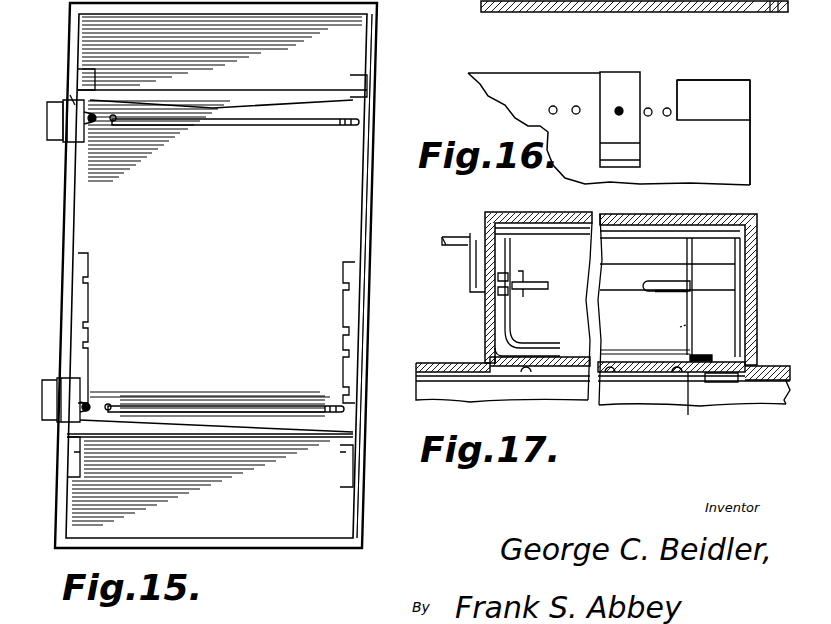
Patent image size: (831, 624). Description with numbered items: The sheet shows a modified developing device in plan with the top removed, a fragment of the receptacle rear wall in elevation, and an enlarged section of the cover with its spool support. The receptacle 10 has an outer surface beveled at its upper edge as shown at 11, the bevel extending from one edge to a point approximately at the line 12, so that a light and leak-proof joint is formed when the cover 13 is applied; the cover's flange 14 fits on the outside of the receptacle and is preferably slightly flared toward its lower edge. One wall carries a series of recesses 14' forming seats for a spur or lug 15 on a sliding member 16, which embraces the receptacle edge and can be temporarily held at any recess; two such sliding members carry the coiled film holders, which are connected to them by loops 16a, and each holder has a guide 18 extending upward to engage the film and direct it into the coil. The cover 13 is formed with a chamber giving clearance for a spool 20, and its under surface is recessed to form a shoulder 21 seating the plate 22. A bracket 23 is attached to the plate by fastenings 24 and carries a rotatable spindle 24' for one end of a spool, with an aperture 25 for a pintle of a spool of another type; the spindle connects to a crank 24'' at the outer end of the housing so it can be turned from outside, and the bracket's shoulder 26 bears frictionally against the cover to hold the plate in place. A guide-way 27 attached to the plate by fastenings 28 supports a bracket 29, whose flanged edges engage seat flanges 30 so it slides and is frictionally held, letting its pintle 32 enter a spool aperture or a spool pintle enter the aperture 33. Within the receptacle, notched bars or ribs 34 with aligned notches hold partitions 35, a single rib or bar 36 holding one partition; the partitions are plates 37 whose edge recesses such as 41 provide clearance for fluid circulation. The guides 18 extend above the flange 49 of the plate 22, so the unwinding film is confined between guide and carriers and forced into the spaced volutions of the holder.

In FIG. 15, the receptacle 10 is at (58, 146).
In FIG. 15, the beveled surface 11 is at (366, 190).
In FIG. 16, the beveled surface 11 is at (742, 100).
In FIG. 15, the line 12 is at (72, 85).
In FIG. 16, the line 12 is at (680, 93).
In FIG. 17, the cover 13 is at (770, 365).
In FIG. 16, the flange 14 is at (657, 98).
In FIG. 16, the recesses 14' is at (564, 97).
In FIG. 16, the spur or lug 15 is at (622, 114).
In FIG. 16, the sliding member 16 is at (618, 75).
In FIG. 15, the loops 16a is at (88, 115).
In FIG. 15, the guide 18 is at (114, 122).
In FIG. 16, the spool 20 is at (740, 163).
In FIG. 17, the shoulder 21 is at (745, 362).
In FIG. 17, the plate 22 is at (697, 401).
In FIG. 17, the bracket 23 is at (498, 298).
In FIG. 17, the fastenings 24 is at (530, 313).
In FIG. 17, the spindle 24' is at (470, 262).
In FIG. 17, the crank 24'' is at (453, 229).
In FIG. 17, the aperture 25 is at (490, 322).
In FIG. 17, the shoulder 26 is at (498, 351).
In FIG. 15, the guide-way 27 is at (292, 125).
In FIG. 17, the guide-way 27 is at (708, 354).
In FIG. 17, the fastenings 28 is at (680, 378).
In FIG. 17, the bracket 29 is at (757, 262).
In FIG. 17, the seat flanges 30 is at (690, 350).
In FIG. 17, the pintle 32 is at (660, 296).
In FIG. 17, the aperture 33 is at (666, 331).
In FIG. 15, the notched bars or ribs 34 is at (76, 315).
In FIG. 15, the partitions 35 is at (325, 439).
In FIG. 15, the rib or bar 36 is at (367, 82).
In FIG. 16, the rib or bar 36 is at (772, 12).
In FIG. 15, the plates 37 is at (262, 92).
In FIG. 17, the plates 37 is at (605, 353).
In FIG. 16, the recess 41 is at (580, 12).
In FIG. 17, the flange 49 is at (712, 380).